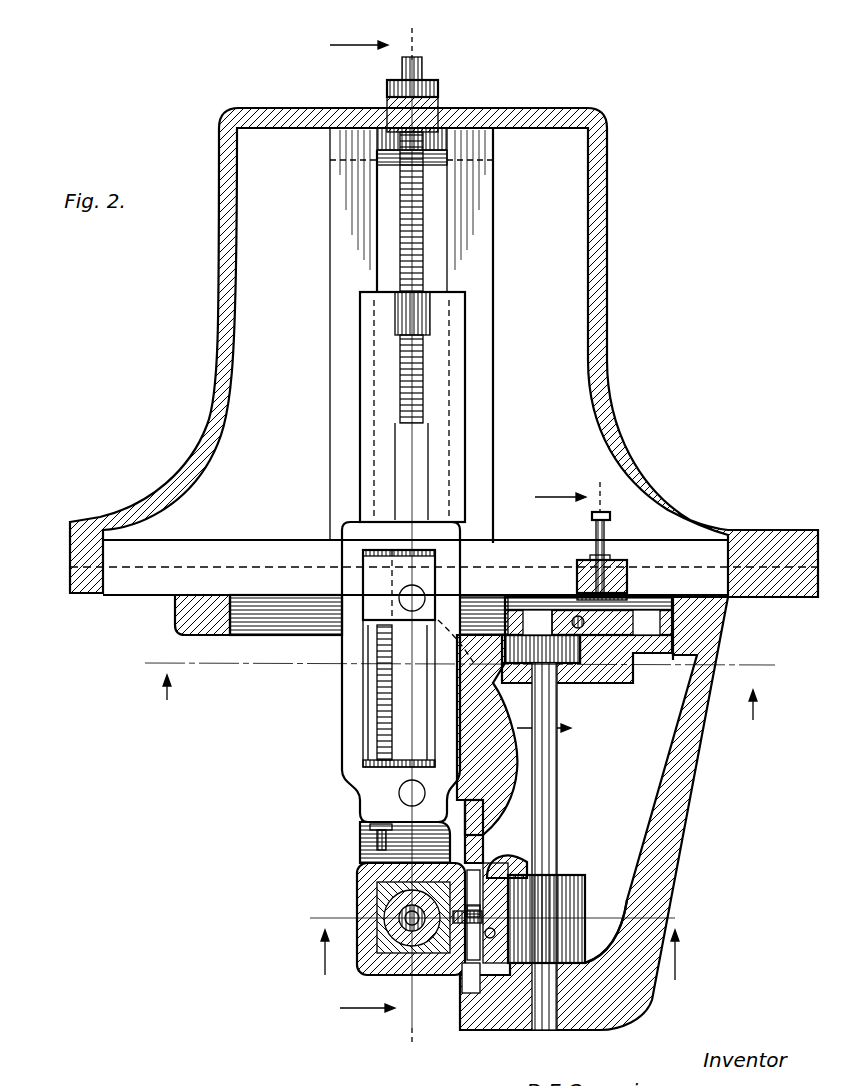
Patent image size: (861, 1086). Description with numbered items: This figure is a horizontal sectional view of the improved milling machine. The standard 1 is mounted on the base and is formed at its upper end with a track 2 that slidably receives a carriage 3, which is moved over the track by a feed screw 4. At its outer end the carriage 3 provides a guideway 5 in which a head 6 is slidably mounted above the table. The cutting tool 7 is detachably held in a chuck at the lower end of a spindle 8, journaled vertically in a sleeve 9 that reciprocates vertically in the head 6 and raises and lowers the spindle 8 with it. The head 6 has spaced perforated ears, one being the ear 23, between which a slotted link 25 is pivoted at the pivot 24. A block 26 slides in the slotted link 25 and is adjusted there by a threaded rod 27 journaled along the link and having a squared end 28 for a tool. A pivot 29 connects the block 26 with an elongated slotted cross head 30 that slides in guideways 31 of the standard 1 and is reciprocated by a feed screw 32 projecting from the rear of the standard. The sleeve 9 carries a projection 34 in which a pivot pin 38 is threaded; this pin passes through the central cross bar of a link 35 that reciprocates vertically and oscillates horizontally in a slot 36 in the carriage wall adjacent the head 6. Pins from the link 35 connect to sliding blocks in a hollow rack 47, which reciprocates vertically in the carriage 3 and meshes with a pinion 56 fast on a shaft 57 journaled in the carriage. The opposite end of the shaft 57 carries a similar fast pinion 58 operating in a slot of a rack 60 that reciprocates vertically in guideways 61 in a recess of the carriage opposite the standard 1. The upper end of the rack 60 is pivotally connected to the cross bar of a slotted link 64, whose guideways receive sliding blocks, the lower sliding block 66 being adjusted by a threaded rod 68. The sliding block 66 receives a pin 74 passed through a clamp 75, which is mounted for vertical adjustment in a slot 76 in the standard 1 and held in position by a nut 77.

The standard 1 is at (219, 278).
The track 2 is at (72, 598).
The carriage 3 is at (690, 828).
The feed screw 4 is at (459, 685).
The guideway 5 is at (468, 1045).
The head 6 is at (372, 880).
The cutting tool 7 is at (561, 618).
The spindle 8 is at (425, 978).
The sleeve 9 is at (365, 955).
The ear 23 is at (368, 856).
The pivot 24 is at (400, 795).
The slotted link 25 is at (352, 717).
The block 26 is at (382, 597).
The threaded rod 27 is at (375, 690).
The squared end 28 is at (372, 838).
The pivot 29 is at (400, 588).
The cross head 30 is at (455, 445).
The guideways 31 is at (342, 262).
The feed screw 32 is at (425, 67).
The projection 34 is at (494, 817).
The link 35 is at (530, 990).
The slot 36 is at (490, 1020).
The pivot pin 38 is at (493, 896).
The hollow rack 47 is at (520, 870).
The pinion 56 is at (560, 893).
The shaft 57 is at (547, 808).
The pinion 58 is at (578, 666).
The rack 60 is at (612, 686).
The guideways 61 is at (636, 660).
The slotted link 64 is at (555, 622).
The sliding block 66 is at (640, 620).
The threaded rod 68 is at (576, 616).
The pin 74 is at (592, 530).
The clamp 75 is at (622, 575).
The slot 76 is at (630, 592).
The nut 77 is at (610, 556).